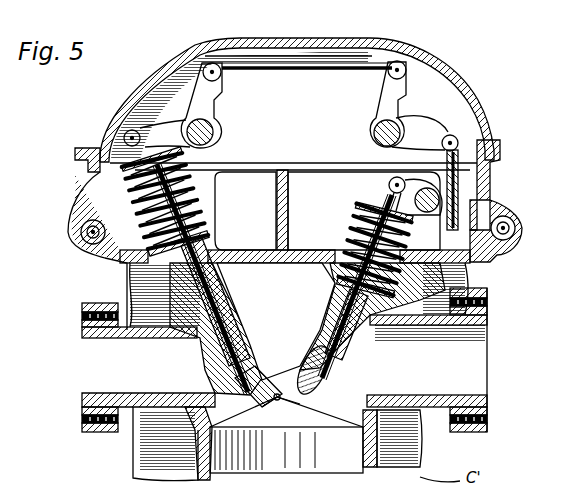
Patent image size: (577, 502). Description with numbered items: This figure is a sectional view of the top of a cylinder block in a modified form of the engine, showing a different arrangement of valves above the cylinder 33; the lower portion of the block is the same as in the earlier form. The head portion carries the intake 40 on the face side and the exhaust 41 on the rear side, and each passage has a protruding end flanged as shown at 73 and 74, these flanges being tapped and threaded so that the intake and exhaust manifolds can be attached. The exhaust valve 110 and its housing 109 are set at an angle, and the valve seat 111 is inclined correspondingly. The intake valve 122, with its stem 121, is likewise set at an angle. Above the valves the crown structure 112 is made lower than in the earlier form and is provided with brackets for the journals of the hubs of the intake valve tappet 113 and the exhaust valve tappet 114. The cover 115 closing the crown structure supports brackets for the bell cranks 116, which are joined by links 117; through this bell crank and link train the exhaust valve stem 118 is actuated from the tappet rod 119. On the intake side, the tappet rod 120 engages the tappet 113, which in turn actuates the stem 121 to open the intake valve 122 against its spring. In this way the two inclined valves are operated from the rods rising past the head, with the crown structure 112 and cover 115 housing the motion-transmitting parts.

The cover 115 is at (455, 80).
The links 117 is at (276, 78).
The bell cranks 116 is at (207, 108).
The exhaust valve tappet 114 is at (155, 118).
The intake valve tappet 113 is at (470, 205).
The tappet rod 119 is at (496, 150).
The tappet rod 120 is at (515, 199).
The crown structure 112 is at (327, 210).
The stem of intake valve 121 is at (340, 317).
The exhaust 41 is at (148, 335).
The flange 74 is at (85, 440).
The intake 40 is at (427, 347).
The flange 73 is at (490, 430).
The cylinder 33 is at (362, 452).
The housing 109 is at (232, 320).
The exhaust valve stem 118 is at (218, 300).
The exhaust valve 110 is at (215, 393).
The intake valve 122 is at (360, 398).
The valve seat 111 is at (273, 402).